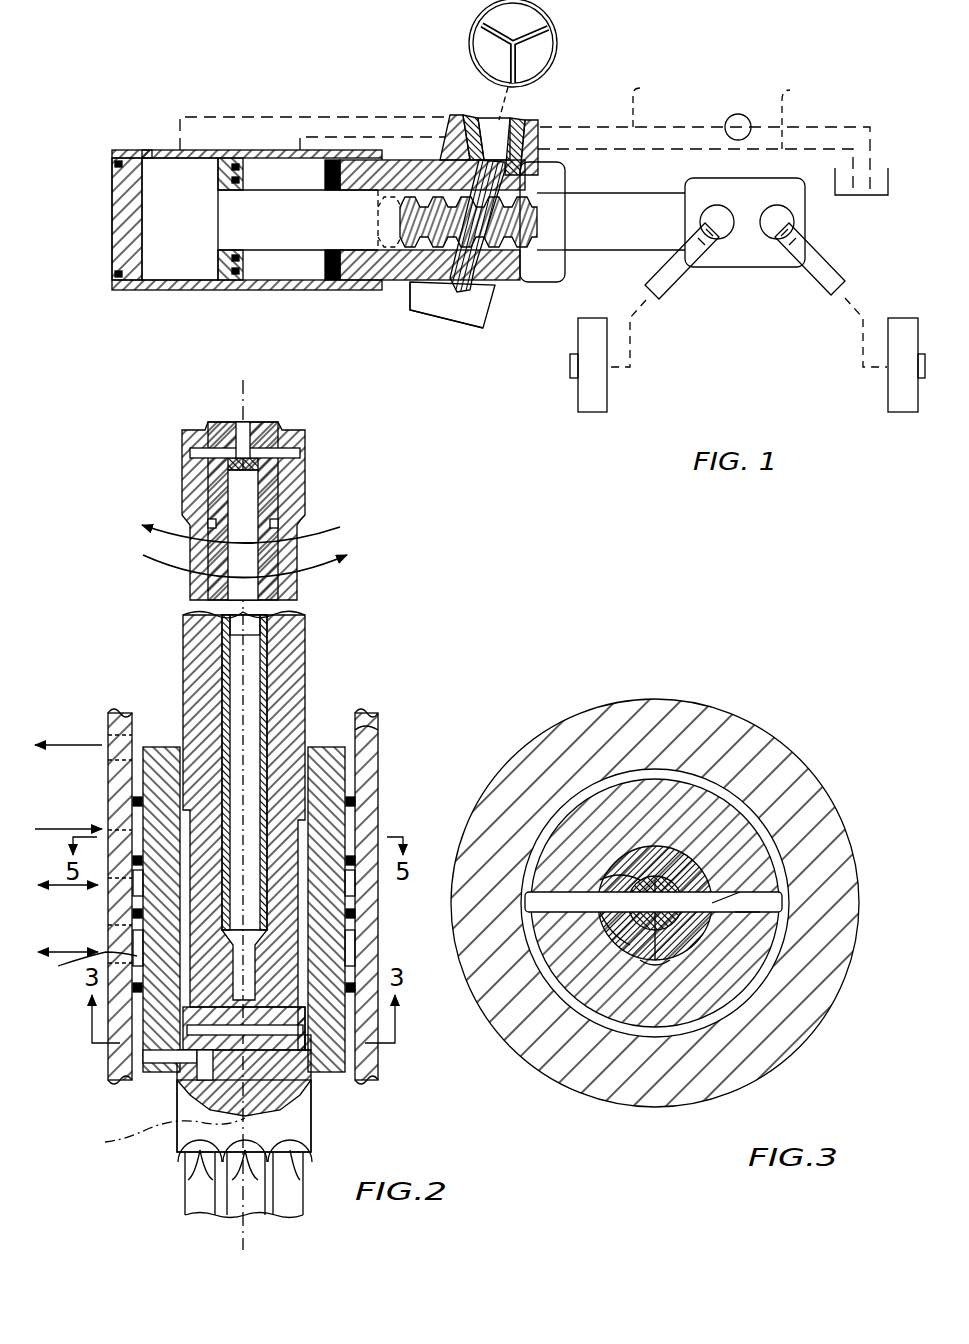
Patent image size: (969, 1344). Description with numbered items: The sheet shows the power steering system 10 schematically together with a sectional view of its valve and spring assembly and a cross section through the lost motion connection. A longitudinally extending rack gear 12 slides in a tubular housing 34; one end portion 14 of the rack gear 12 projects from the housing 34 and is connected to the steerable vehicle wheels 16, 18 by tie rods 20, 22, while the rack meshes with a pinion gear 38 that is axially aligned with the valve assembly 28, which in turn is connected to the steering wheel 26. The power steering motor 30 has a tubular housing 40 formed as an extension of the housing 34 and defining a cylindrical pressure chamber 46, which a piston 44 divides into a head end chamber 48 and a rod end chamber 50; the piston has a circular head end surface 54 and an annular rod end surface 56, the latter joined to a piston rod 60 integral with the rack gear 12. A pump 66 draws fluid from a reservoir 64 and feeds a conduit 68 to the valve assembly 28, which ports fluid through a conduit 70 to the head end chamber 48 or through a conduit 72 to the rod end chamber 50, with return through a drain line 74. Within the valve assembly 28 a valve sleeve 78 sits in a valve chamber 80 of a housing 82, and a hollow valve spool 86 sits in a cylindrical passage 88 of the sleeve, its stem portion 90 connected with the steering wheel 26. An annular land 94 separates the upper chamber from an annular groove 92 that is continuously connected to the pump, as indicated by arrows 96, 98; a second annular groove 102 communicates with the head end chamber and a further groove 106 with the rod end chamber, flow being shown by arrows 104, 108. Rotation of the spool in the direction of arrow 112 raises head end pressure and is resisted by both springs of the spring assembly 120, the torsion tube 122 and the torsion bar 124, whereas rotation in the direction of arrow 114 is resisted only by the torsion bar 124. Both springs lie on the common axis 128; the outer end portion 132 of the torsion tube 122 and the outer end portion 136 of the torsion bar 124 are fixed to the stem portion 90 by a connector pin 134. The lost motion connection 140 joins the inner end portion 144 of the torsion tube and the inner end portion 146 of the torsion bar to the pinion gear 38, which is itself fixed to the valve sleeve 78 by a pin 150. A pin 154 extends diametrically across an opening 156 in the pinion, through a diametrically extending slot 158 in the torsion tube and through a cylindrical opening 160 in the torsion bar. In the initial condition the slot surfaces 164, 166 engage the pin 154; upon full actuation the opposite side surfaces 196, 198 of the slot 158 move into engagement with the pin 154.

In FIG. 1, the power steering system 10 is at (98, 112).
In FIG. 1, the rack gear 12 is at (540, 218).
In FIG. 1, the end portion of the rack gear 14 is at (797, 208).
In FIG. 1, the steerable vehicle wheel 16 is at (590, 404).
In FIG. 1, the steerable vehicle wheel 18 is at (905, 402).
In FIG. 1, the tie rod 20 is at (680, 285).
In FIG. 1, the tie rod 22 is at (830, 280).
In FIG. 1, the steering wheel 26 is at (557, 30).
In FIG. 1, the valve assembly 28 is at (540, 116).
In FIG. 2, the valve assembly 28 is at (128, 617).
In FIG. 3, the valve assembly 28 is at (790, 738).
In FIG. 1, the power steering motor 30 is at (106, 212).
In FIG. 1, the tubular housing 34 is at (498, 292).
In FIG. 1, the pinion gear 38 is at (440, 278).
In FIG. 2, the pinion gear 38 is at (190, 1206).
In FIG. 3, the pinion gear 38 is at (647, 772).
In FIG. 1, the tubular housing 40 is at (172, 291).
In FIG. 1, the piston 44 is at (238, 283).
In FIG. 1, the cylindrical pressure chamber 46 is at (150, 151).
In FIG. 1, the head end chamber 48 is at (140, 257).
In FIG. 1, the rod end chamber 50 is at (280, 282).
In FIG. 1, the circular head end surface 54 is at (217, 206).
In FIG. 1, the annular rod end surface 56 is at (248, 178).
In FIG. 1, the piston rod 60 is at (332, 272).
In FIG. 1, the reservoir 64 is at (889, 173).
In FIG. 1, the pump 66 is at (734, 114).
In FIG. 1, the conduit 68 is at (654, 101).
In FIG. 1, the conduit 70 is at (272, 117).
In FIG. 1, the conduit 72 is at (345, 137).
In FIG. 1, the drain line 74 is at (803, 112).
In FIG. 2, the valve sleeve 78 is at (330, 744).
In FIG. 3, the valve sleeve 78 is at (800, 985).
In FIG. 2, the valve chamber 80 is at (368, 740).
In FIG. 2, the housing 82 is at (372, 772).
In FIG. 2, the valve spool 86 is at (292, 870).
In FIG. 2, the cylindrical passage 88 is at (326, 906).
In FIG. 2, the stem portion 90 is at (299, 436).
In FIG. 2, the annular groove 92 is at (136, 832).
In FIG. 2, the annular land 94 is at (132, 790).
In FIG. 2, the arrow 96 is at (76, 745).
In FIG. 2, the arrow 98 is at (60, 829).
In FIG. 2, the second annular groove 102 is at (138, 890).
In FIG. 2, the arrow 104 is at (33, 885).
In FIG. 2, the groove 106 is at (78, 967).
In FIG. 2, the arrow 108 is at (72, 952).
In FIG. 2, the arrow 112 is at (160, 530).
In FIG. 2, the arrow 114 is at (345, 556).
In FIG. 2, the spring assembly 120 is at (218, 640).
In FIG. 2, the torsion tube 122 is at (222, 668).
In FIG. 3, the torsion tube 122 is at (648, 876).
In FIG. 2, the torsion bar 124 is at (240, 688).
In FIG. 3, the torsion bar 124 is at (618, 860).
In FIG. 2, the common axis 128 is at (155, 1138).
In FIG. 2, the outer end portion of the torsion tube 132 is at (270, 480).
In FIG. 2, the connector pin 134 is at (205, 430).
In FIG. 2, the outer end portion of the torsion bar 136 is at (258, 420).
In FIG. 2, the lost motion connection 140 is at (292, 1082).
In FIG. 3, the lost motion connection 140 is at (803, 832).
In FIG. 2, the inner end portion of the torsion tube 144 is at (306, 1032).
In FIG. 2, the inner end portion of the torsion bar 146 is at (302, 1096).
In FIG. 2, the pin 150 is at (197, 1060).
In FIG. 2, the pin 154 is at (316, 1054).
In FIG. 3, the pin 154 is at (733, 905).
In FIG. 2, the opening 156 is at (186, 1086).
In FIG. 3, the opening 156 is at (657, 962).
In FIG. 2, the slot 158 is at (220, 1046).
In FIG. 3, the slot 158 is at (482, 1010).
In FIG. 2, the cylindrical opening 160 is at (200, 1030).
In FIG. 3, the cylindrical opening 160 is at (628, 857).
In FIG. 3, the surface 164 is at (612, 885).
In FIG. 3, the surface 166 is at (668, 955).
In FIG. 3, the side surface of the slot 196 is at (600, 930).
In FIG. 3, the side surface of the slot 198 is at (725, 884).